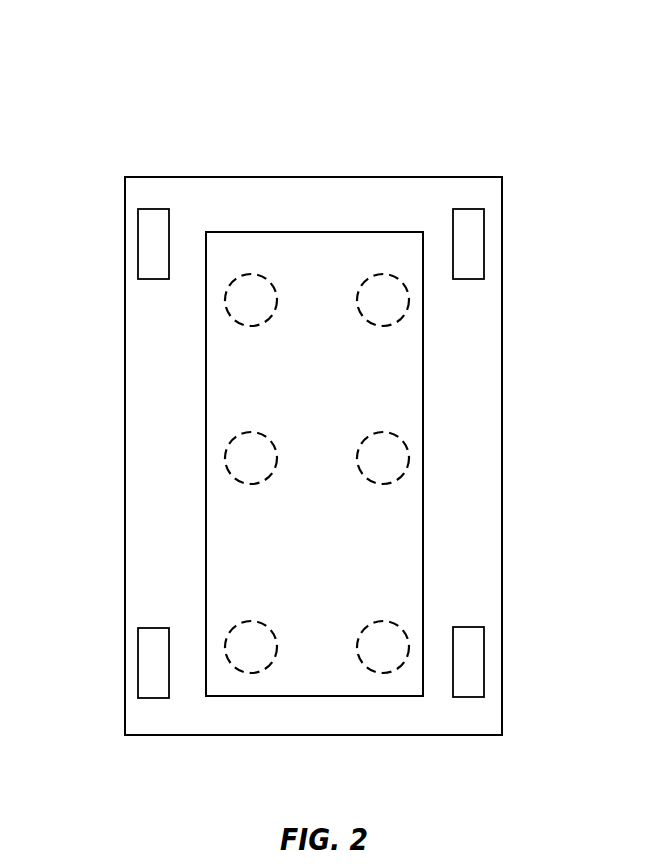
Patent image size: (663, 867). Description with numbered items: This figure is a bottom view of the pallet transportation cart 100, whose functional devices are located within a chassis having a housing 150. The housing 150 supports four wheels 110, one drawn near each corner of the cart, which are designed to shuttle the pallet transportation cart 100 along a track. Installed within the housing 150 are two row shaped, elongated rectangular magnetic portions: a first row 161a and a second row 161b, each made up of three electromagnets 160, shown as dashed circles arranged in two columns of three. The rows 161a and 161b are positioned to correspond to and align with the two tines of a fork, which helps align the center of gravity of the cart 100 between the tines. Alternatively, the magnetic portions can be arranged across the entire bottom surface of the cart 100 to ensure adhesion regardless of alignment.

The pallet transportation cart 100 is at (185, 112).
The housing 150 is at (124, 407).
The wheels 110 is at (146, 250).
The electromagnets 160 is at (243, 324).
The first row of electromagnets 161a is at (251, 274).
The second row of electromagnets 161b is at (383, 274).